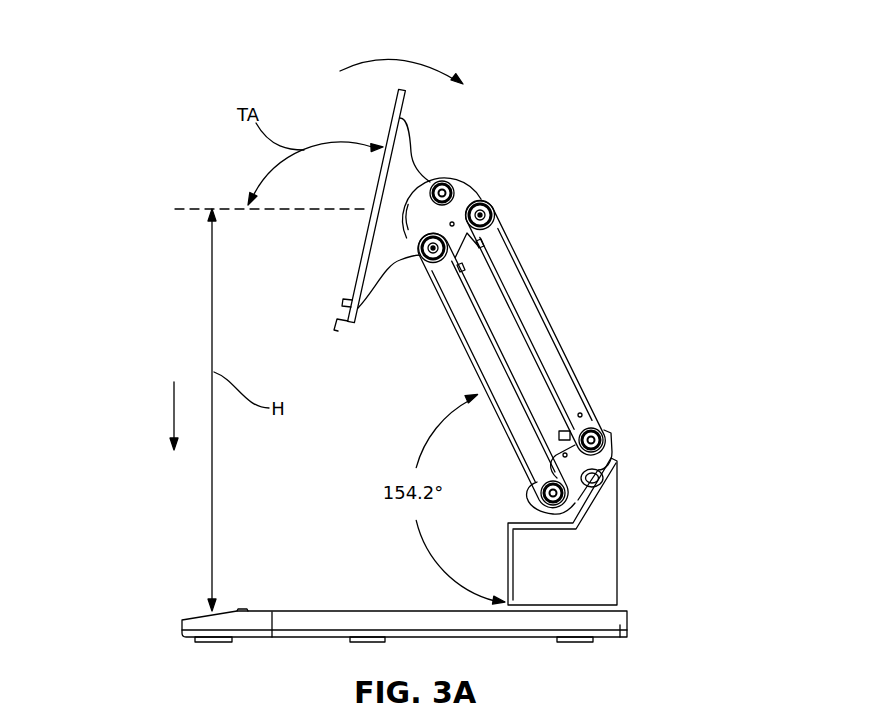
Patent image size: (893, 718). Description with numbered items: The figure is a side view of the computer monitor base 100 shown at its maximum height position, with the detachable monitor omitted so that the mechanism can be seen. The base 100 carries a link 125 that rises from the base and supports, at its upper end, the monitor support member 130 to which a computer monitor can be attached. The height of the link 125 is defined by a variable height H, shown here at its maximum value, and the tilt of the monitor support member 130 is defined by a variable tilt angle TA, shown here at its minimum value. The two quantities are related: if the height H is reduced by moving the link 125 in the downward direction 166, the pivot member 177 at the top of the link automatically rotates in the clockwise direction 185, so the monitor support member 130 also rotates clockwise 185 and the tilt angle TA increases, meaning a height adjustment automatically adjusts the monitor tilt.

The computer monitor base 100 is at (618, 522).
The link 125 is at (506, 229).
The monitor support member 130 is at (357, 257).
The downward direction 166 is at (173, 418).
The pivot member 177 is at (460, 190).
The clockwise direction 185 is at (427, 62).